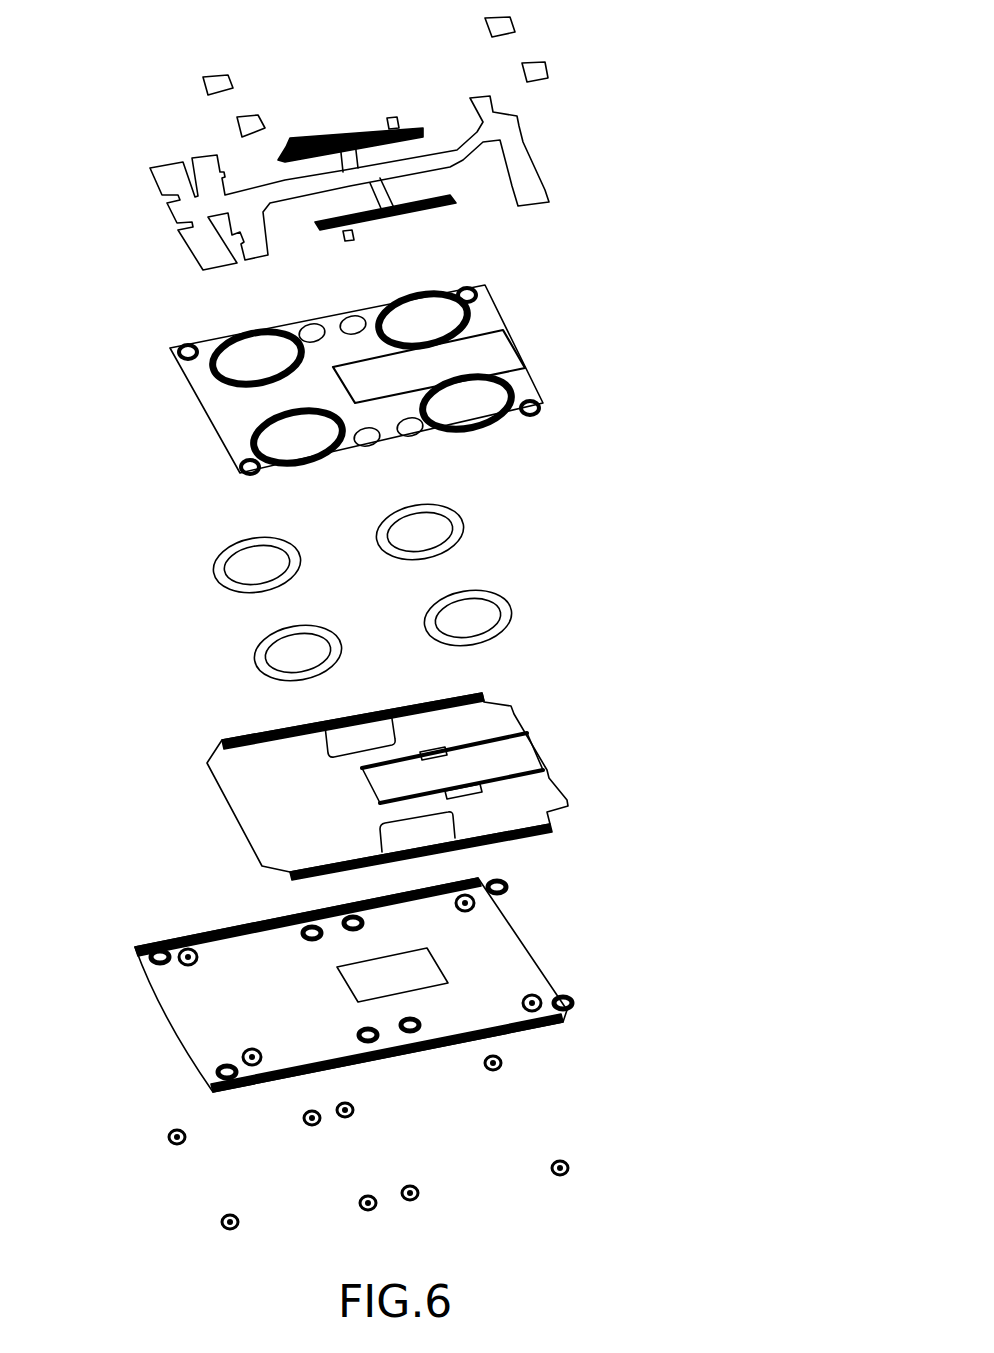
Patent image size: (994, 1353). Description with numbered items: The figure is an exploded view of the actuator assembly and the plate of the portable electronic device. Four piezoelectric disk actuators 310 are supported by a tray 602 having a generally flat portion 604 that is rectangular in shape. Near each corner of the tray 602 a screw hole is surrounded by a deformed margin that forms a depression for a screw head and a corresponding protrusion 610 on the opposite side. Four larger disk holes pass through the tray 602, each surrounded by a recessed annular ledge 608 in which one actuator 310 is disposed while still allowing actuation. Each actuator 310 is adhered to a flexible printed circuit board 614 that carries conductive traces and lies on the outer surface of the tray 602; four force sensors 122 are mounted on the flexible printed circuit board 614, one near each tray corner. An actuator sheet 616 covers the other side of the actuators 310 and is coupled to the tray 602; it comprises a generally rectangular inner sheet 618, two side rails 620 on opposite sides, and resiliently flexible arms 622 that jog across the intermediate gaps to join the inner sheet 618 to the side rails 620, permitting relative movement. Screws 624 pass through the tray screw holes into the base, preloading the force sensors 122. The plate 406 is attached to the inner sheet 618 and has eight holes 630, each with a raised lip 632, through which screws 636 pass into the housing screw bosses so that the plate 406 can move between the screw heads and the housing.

The force sensors 122 is at (205, 80).
The flexible printed circuit board 614 is at (525, 140).
The generally flat portion 604 is at (205, 397).
The recessed annular ledge 608 is at (418, 296).
The protrusion 610 is at (482, 292).
The tray 602 is at (535, 375).
The piezoelectric disk actuators 310 is at (273, 543).
The actuator sheet 616 is at (550, 778).
The inner sheet 618 is at (518, 713).
The side rails 620 is at (358, 715).
The resiliently flexible arms 622 is at (280, 732).
The plate 406 is at (548, 945).
The screws 624 is at (178, 952).
The holes 630 is at (578, 1003).
The raised lip 632 is at (407, 1045).
The screws 636 is at (575, 1166).